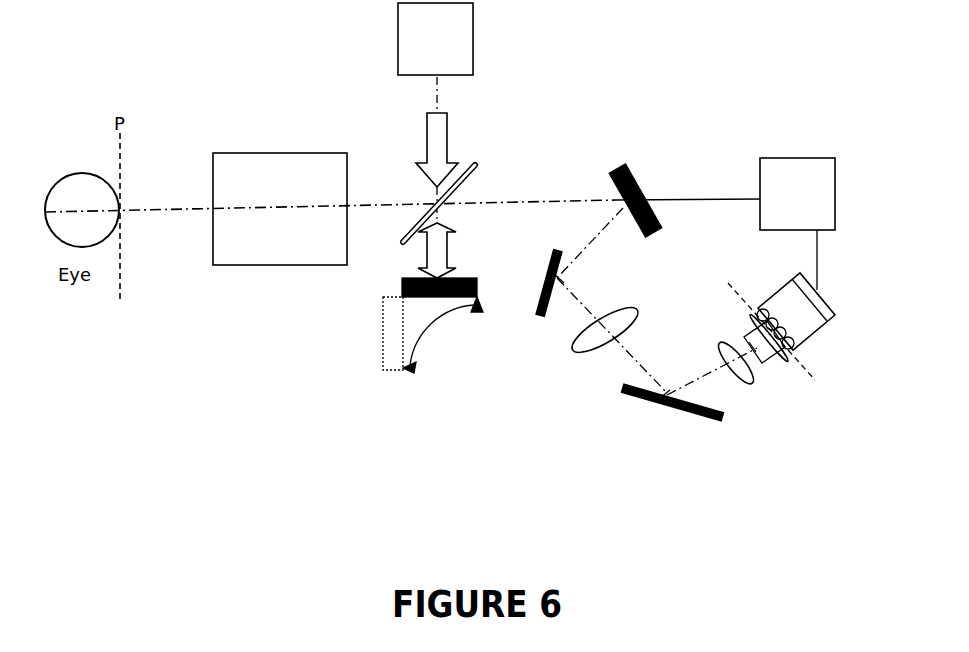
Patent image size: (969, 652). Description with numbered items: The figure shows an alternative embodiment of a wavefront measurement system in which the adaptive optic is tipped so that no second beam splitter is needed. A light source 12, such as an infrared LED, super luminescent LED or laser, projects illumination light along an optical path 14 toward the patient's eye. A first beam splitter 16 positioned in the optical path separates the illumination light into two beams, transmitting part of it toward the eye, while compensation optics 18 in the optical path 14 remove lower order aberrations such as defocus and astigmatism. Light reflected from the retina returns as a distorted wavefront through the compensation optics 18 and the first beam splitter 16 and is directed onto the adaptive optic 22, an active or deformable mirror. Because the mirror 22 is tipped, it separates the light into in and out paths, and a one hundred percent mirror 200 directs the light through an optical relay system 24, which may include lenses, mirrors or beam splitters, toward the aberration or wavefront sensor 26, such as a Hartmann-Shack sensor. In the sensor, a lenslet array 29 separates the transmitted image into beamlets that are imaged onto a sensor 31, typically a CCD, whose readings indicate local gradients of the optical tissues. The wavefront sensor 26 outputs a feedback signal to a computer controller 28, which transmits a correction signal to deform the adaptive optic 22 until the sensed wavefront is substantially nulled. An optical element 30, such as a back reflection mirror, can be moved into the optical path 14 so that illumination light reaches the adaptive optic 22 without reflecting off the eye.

The light source 12 is at (451, 51).
The optical path 14 is at (148, 208).
The first beam splitter 16 is at (474, 166).
The compensation optics 18 is at (307, 152).
The adaptive optic 22 is at (632, 175).
The optical relay system 24 is at (648, 448).
The wavefront sensor 26 is at (842, 348).
The computer controller 28 is at (811, 204).
The lenslet array 29 is at (760, 306).
The optical element 30 is at (383, 352).
The sensor 31 is at (827, 300).
The mirror 200 is at (540, 318).